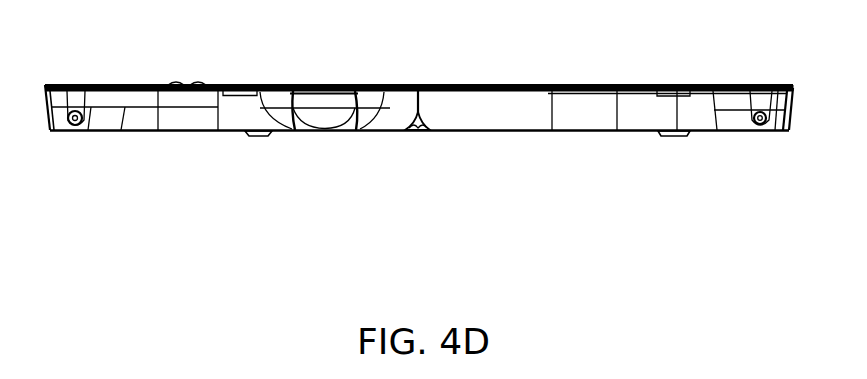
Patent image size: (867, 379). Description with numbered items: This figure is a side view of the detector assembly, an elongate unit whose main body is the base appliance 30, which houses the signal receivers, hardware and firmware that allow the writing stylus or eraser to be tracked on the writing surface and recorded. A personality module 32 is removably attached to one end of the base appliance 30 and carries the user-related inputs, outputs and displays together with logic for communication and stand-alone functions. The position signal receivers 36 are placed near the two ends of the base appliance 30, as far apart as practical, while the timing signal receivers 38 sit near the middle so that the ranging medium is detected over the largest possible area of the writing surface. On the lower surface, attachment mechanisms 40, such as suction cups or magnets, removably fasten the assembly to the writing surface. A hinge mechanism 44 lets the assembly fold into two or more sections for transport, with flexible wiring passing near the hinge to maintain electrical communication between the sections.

The base appliance 30 is at (498, 100).
The personality module 32 is at (85, 100).
The position signal receivers 36 is at (72, 133).
The timing signal receivers 38 is at (307, 103).
The attachment mechanisms 40 is at (262, 137).
The hinge mechanism 44 is at (418, 135).